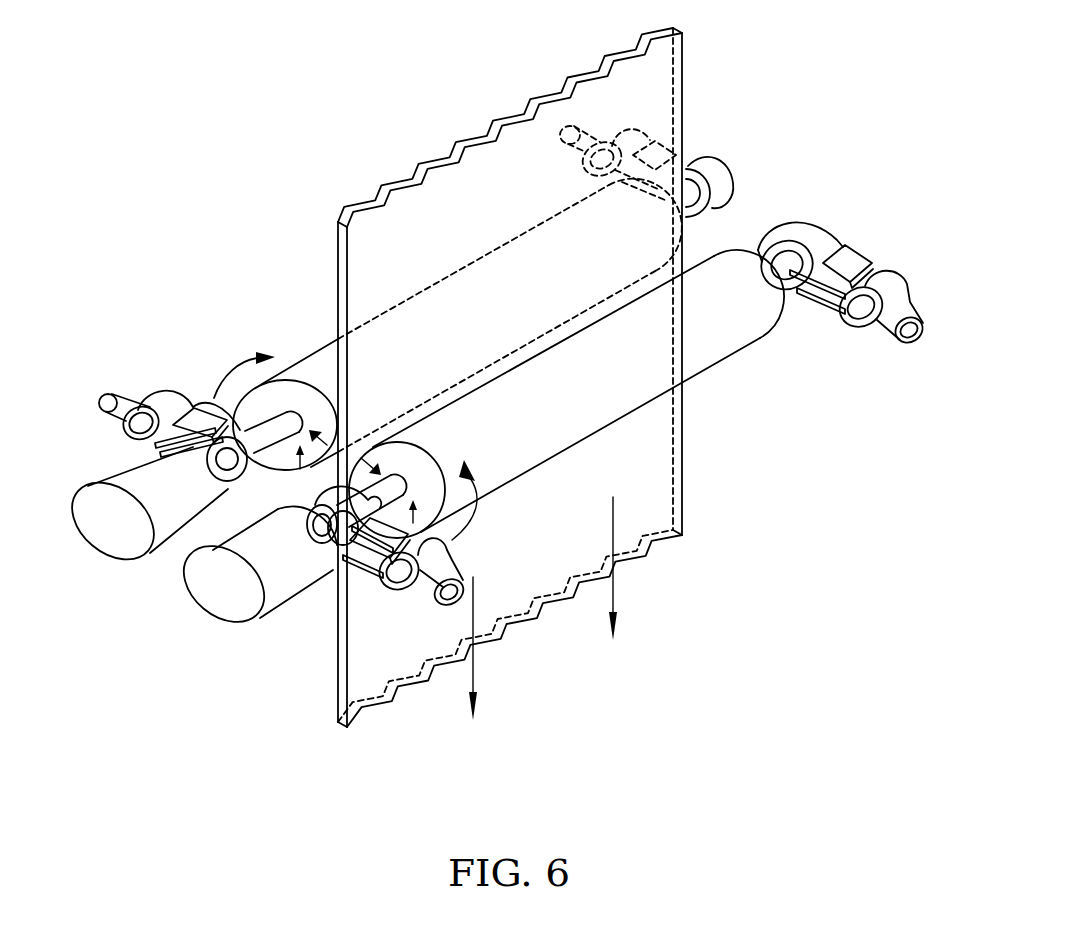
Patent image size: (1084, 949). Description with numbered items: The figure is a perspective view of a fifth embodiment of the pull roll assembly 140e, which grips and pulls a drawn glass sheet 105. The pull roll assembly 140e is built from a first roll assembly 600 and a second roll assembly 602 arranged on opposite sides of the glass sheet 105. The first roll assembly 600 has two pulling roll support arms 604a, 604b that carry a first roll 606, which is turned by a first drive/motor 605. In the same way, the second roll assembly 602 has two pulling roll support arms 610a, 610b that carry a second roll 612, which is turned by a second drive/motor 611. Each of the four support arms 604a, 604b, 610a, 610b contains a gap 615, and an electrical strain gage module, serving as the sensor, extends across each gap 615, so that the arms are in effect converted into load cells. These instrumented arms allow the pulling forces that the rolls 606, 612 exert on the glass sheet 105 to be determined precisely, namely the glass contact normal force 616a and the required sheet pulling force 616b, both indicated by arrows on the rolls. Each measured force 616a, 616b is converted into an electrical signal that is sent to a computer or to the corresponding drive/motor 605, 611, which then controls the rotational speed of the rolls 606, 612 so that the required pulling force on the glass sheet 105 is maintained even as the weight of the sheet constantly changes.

The drawn glass sheet 105 is at (338, 705).
The second roll 612 is at (318, 347).
The first roll 606 is at (722, 363).
The second drive/motor 611 is at (103, 552).
The first drive/motor 605 is at (200, 613).
The pulling roll support arm 610a is at (126, 432).
The pulling roll support arm 610b is at (733, 188).
The second roll assembly 602 is at (741, 157).
The first roll assembly 600 is at (853, 224).
The pulling roll support arm 604a is at (387, 575).
The pulling roll support arm 604b is at (852, 325).
The gap 615 is at (590, 175).
The glass contact normal force 616a is at (338, 411).
The required sheet pulling force 616b is at (297, 474).
The pull roll assembly 140e is at (848, 157).